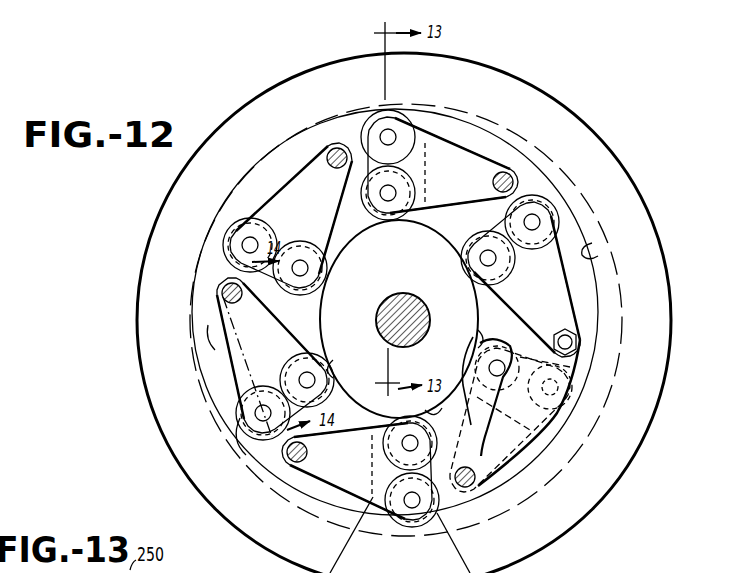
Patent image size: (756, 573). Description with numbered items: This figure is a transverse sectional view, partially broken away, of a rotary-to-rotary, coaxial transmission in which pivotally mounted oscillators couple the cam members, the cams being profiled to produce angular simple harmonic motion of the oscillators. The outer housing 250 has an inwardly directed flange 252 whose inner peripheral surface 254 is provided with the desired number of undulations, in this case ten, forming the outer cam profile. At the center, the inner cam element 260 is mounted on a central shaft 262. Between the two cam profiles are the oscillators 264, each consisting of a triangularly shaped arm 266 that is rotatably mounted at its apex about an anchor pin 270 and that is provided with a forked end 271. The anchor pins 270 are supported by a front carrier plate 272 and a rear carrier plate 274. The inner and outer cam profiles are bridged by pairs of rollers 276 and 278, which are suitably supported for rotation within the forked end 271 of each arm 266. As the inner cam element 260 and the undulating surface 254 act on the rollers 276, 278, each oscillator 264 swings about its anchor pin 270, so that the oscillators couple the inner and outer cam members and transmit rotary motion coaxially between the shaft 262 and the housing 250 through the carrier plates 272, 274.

The outer housing 250 is at (568, 107).
The inwardly directed flange 252 is at (553, 185).
The inner peripheral surface 254 is at (595, 252).
The inner cam element 260 is at (453, 280).
The central shaft 262 is at (428, 308).
The oscillators 264 is at (276, 171).
The triangularly shaped arm 266 is at (475, 185).
The anchor pin 270 is at (336, 148).
The forked end 271 is at (421, 157).
The front carrier plate 272 is at (561, 477).
The rear carrier plate 274 is at (228, 350).
The roller 276 is at (333, 368).
The roller 278 is at (574, 396).